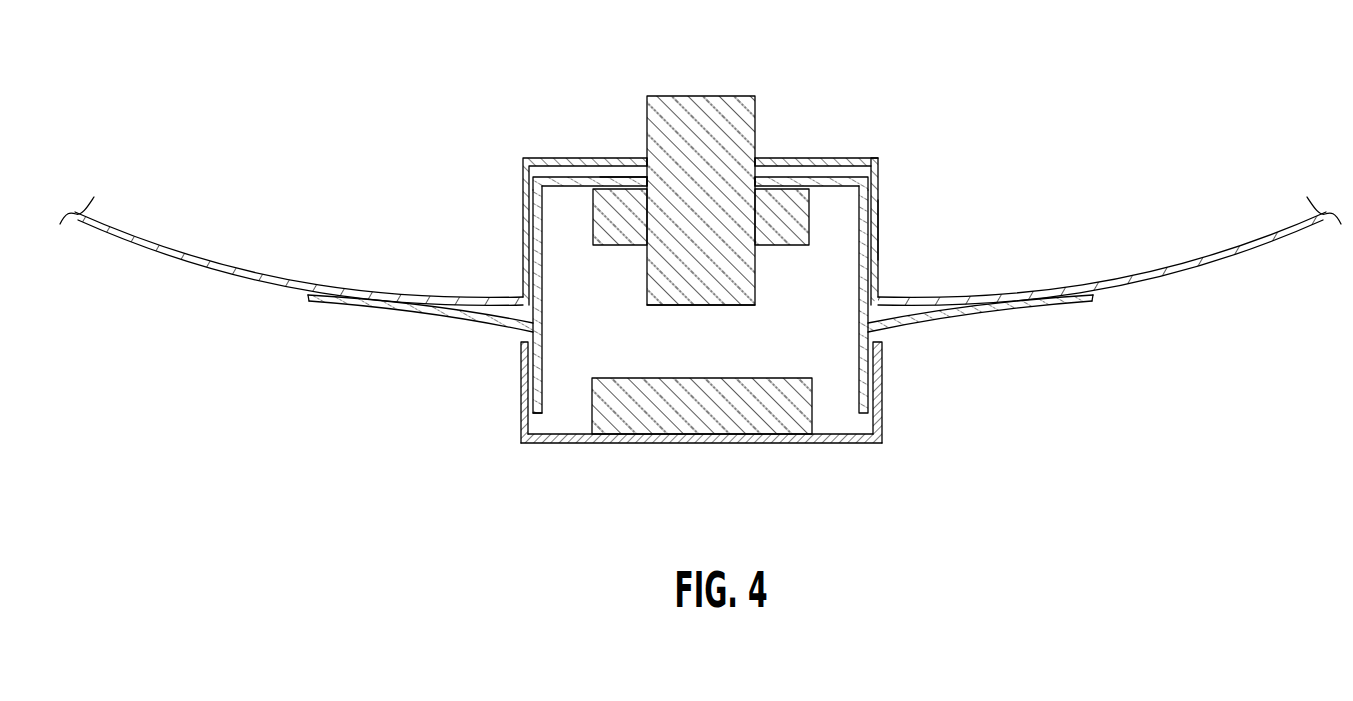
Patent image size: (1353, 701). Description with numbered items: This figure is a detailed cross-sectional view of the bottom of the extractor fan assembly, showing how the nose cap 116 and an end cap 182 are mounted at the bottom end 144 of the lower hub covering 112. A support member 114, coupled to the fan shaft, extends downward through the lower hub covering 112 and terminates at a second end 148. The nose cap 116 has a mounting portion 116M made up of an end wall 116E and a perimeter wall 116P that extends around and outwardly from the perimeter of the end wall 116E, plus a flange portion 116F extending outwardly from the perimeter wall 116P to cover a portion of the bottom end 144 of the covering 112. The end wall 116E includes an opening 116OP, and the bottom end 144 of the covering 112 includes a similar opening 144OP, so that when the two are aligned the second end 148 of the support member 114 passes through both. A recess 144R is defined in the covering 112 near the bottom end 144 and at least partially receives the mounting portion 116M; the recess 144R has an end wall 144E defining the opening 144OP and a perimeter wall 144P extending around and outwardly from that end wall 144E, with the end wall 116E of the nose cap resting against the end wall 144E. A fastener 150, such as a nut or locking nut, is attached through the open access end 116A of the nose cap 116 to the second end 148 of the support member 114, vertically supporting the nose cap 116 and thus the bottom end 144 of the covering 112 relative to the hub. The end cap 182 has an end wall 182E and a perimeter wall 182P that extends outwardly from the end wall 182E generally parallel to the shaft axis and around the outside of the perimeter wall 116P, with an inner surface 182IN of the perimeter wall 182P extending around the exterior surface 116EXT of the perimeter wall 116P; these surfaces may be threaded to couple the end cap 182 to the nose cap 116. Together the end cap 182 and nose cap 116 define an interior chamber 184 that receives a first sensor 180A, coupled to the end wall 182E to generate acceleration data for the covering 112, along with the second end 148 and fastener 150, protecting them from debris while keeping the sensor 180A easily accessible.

The lower hub covering 112 is at (237, 286).
The support member 114 is at (686, 189).
The nose cap 116 is at (700, 278).
The mounting portion 116M is at (560, 169).
The end wall 116E is at (605, 183).
The opening 116OP is at (764, 178).
The perimeter wall 116P is at (529, 363).
The open access end 116A is at (528, 438).
The exterior surface 116EXT is at (883, 391).
The flange portion 116F is at (437, 331).
The bottom end 144 is at (932, 181).
The recess 144R is at (888, 176).
The perimeter wall 144P is at (886, 225).
The end wall 144E is at (867, 163).
The opening 144OP is at (760, 162).
The second end 148 is at (705, 306).
The fastener 150 is at (805, 201).
The first sensor 180A is at (646, 422).
The end cap 182 is at (698, 437).
The perimeter wall 182P is at (513, 419).
The inner surface 182IN is at (865, 371).
The end wall 182E is at (577, 443).
The interior chamber 184 is at (571, 335).